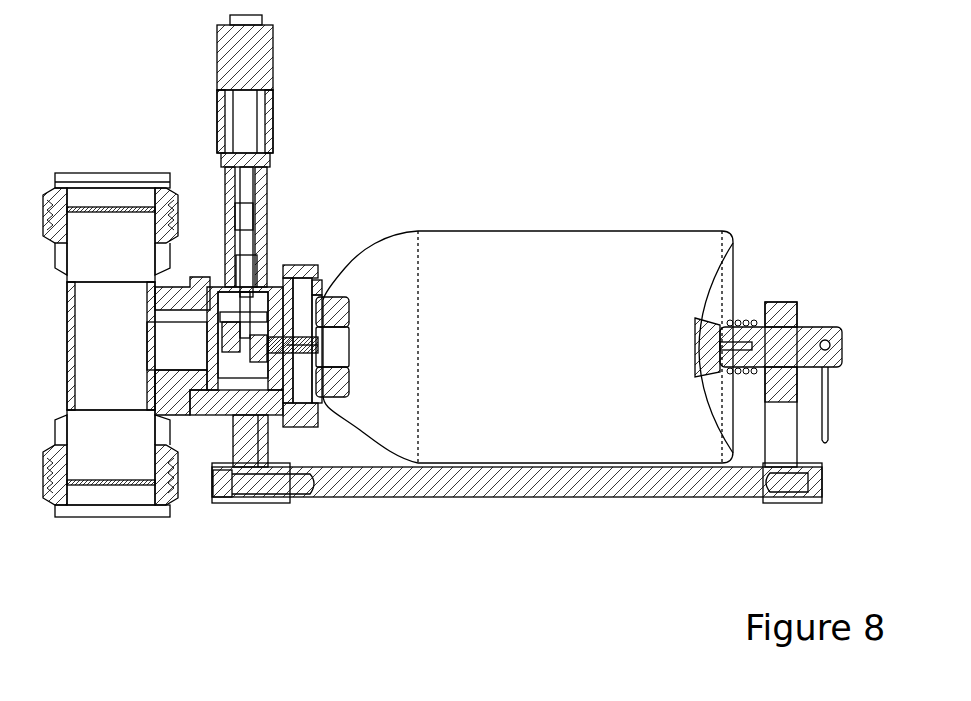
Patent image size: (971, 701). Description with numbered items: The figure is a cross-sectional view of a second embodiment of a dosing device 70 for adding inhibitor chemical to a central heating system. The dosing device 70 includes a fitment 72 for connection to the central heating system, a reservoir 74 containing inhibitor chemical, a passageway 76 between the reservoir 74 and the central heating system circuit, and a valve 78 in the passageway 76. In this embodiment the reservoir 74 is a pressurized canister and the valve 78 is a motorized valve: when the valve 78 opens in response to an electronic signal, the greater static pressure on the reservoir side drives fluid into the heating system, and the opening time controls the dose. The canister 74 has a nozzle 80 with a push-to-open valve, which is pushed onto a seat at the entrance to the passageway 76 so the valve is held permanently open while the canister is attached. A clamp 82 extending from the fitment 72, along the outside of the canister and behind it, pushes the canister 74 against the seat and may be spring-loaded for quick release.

The dosing device 70 is at (700, 132).
The fitment 72 is at (131, 507).
The reservoir 74 is at (498, 428).
The passageway 76 is at (250, 344).
The valve 78 is at (243, 296).
The nozzle 80 is at (317, 358).
The clamp 82 is at (603, 484).